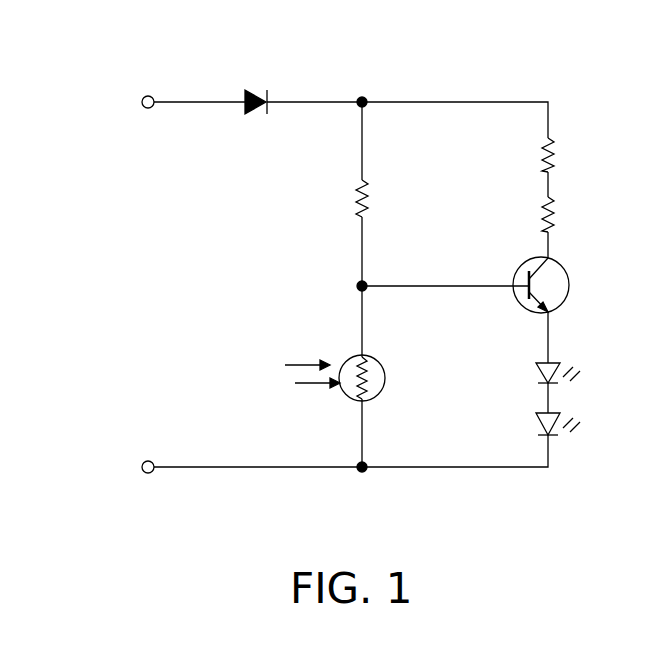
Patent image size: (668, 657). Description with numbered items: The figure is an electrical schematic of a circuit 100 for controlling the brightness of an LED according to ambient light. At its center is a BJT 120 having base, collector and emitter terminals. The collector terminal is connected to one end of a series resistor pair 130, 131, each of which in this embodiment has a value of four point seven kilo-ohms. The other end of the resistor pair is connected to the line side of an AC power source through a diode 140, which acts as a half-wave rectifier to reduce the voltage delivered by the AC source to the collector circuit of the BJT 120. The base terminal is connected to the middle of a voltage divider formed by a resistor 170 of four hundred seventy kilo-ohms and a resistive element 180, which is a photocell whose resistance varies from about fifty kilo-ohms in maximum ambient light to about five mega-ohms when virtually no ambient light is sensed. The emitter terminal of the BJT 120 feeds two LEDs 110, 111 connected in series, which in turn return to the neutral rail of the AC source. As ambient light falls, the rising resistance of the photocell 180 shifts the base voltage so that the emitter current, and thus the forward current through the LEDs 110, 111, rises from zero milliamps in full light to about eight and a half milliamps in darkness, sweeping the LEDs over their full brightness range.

The circuit 100 is at (493, 58).
The diode 140 is at (259, 88).
The resistor 170 is at (355, 202).
The series resistor 130 is at (553, 150).
The series resistor 131 is at (553, 211).
The BJT 120 is at (582, 283).
The LED 110 is at (553, 364).
The LED 111 is at (553, 415).
The photocell 180 is at (365, 358).